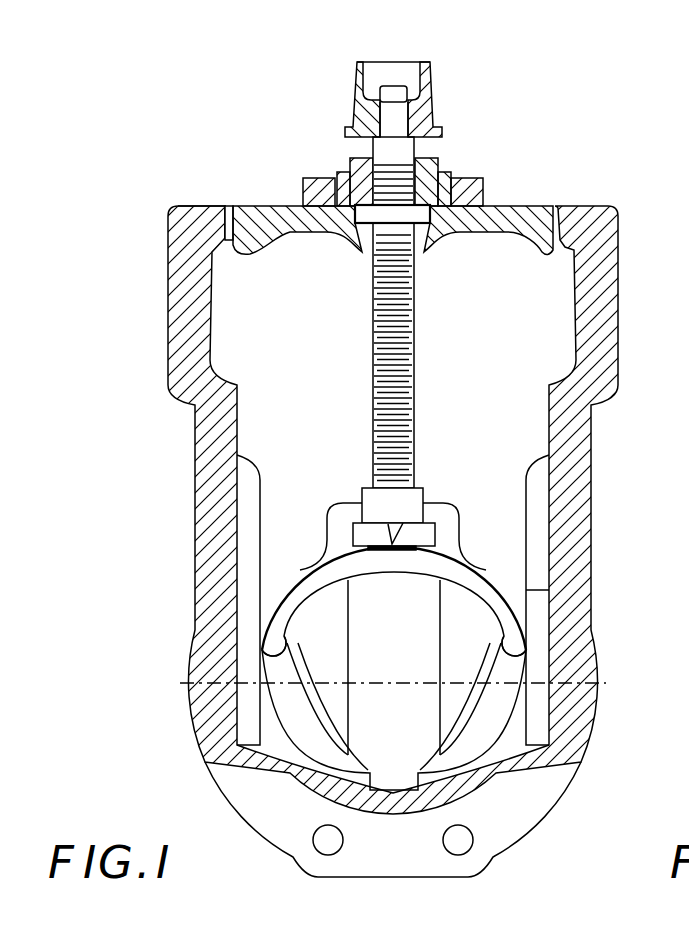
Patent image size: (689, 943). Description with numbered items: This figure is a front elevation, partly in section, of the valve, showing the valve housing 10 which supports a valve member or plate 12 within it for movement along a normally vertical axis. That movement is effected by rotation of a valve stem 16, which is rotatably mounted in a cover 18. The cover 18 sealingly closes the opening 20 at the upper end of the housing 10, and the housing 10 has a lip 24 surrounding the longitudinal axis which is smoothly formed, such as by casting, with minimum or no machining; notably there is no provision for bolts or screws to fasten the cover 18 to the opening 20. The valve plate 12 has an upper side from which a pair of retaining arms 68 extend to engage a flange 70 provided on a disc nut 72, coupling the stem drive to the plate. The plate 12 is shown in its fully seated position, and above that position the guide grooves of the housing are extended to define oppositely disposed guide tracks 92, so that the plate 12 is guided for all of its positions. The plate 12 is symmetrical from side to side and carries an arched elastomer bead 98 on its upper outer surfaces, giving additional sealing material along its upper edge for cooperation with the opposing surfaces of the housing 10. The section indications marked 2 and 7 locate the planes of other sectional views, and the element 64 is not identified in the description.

The section line 2- 2 is at (385, 48).
The section line 7- 7 is at (293, 523).
The valve housing 10 is at (618, 268).
The valve member or plate 12 is at (484, 560).
The valve stem 16 is at (373, 345).
The cover 18 is at (290, 233).
The opening 20 is at (233, 207).
The lip 24 is at (223, 206).
The yoke arch 64 is at (502, 572).
The retaining arms 68 is at (338, 510).
The flange 70 is at (373, 530).
The disc nut 72 is at (380, 507).
The guide tracks 92 is at (248, 477).
The arched elastomer bead 98 is at (292, 613).